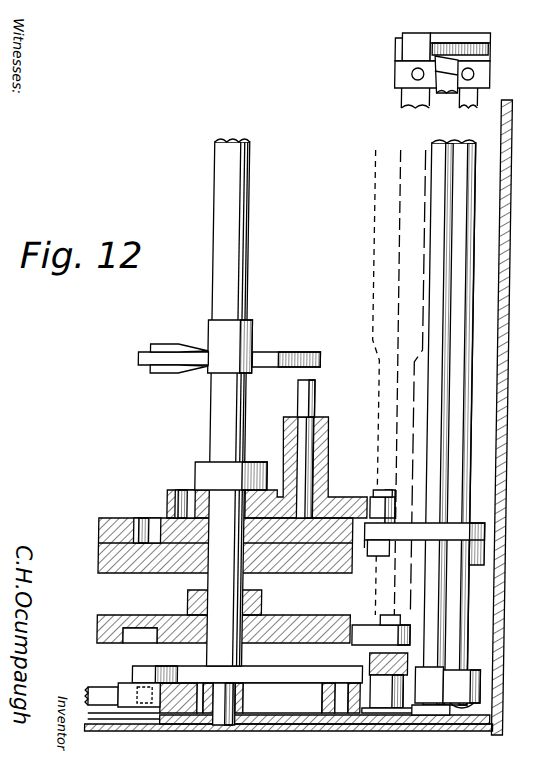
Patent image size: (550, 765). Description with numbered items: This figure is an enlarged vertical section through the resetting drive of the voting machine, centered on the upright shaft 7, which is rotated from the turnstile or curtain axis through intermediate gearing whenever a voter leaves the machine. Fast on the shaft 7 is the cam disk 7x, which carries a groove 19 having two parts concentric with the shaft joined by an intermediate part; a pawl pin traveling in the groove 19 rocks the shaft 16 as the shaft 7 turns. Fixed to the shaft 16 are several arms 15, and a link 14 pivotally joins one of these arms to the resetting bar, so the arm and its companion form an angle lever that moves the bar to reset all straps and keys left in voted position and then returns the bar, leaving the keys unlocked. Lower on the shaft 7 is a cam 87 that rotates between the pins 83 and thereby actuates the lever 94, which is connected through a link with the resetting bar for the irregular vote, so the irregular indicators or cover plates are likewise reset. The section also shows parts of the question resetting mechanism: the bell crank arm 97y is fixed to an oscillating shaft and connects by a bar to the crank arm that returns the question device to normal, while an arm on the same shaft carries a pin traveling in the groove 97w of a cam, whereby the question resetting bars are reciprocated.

The shaft 7 is at (229, 402).
The cam disk 7x is at (107, 621).
The groove 97w is at (163, 517).
The link 14 is at (370, 624).
The arm 15 is at (419, 658).
The shaft 16 is at (479, 577).
The groove 19 is at (138, 646).
The cam 87 is at (247, 665).
The pin 83 is at (358, 714).
The lever 94 is at (103, 687).
The bell crank arm 97y is at (437, 722).